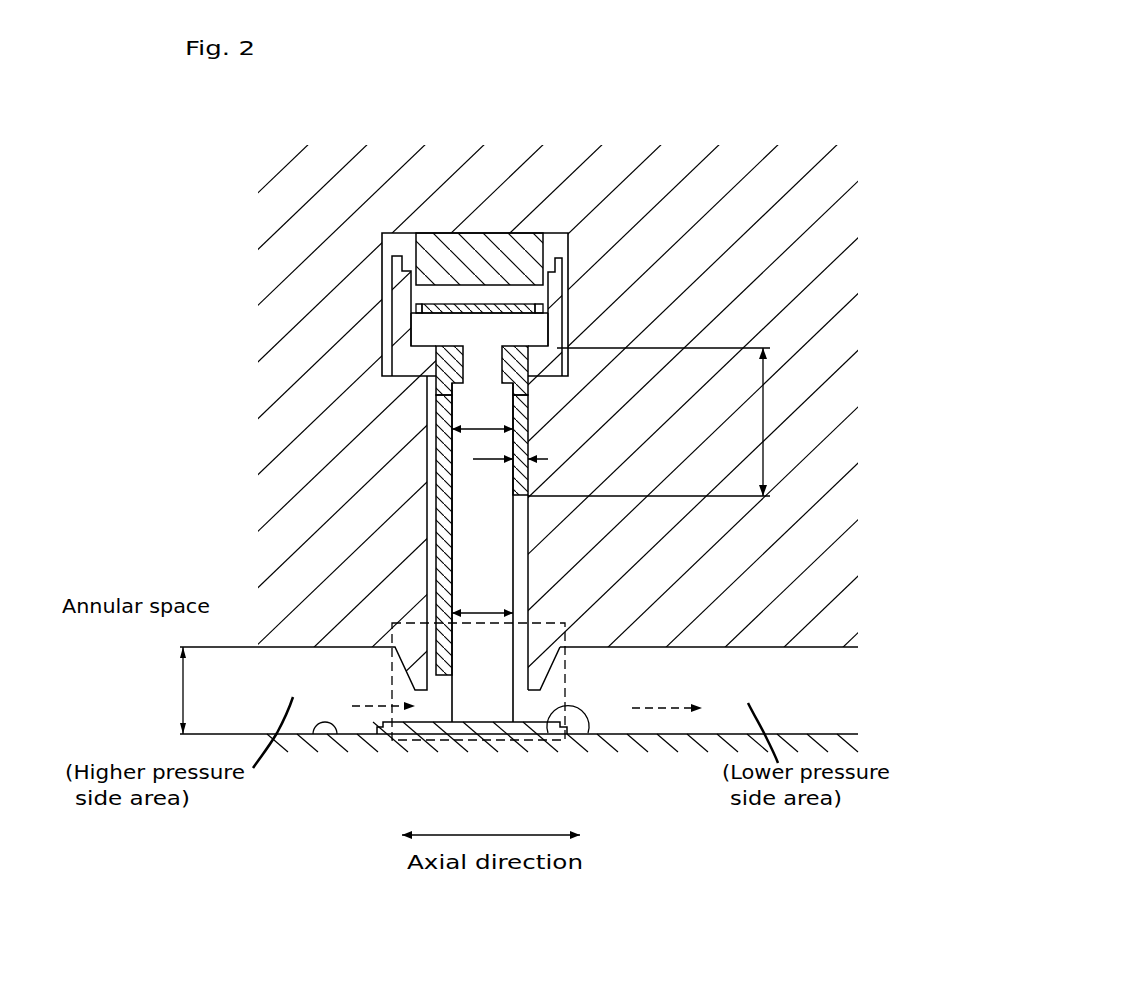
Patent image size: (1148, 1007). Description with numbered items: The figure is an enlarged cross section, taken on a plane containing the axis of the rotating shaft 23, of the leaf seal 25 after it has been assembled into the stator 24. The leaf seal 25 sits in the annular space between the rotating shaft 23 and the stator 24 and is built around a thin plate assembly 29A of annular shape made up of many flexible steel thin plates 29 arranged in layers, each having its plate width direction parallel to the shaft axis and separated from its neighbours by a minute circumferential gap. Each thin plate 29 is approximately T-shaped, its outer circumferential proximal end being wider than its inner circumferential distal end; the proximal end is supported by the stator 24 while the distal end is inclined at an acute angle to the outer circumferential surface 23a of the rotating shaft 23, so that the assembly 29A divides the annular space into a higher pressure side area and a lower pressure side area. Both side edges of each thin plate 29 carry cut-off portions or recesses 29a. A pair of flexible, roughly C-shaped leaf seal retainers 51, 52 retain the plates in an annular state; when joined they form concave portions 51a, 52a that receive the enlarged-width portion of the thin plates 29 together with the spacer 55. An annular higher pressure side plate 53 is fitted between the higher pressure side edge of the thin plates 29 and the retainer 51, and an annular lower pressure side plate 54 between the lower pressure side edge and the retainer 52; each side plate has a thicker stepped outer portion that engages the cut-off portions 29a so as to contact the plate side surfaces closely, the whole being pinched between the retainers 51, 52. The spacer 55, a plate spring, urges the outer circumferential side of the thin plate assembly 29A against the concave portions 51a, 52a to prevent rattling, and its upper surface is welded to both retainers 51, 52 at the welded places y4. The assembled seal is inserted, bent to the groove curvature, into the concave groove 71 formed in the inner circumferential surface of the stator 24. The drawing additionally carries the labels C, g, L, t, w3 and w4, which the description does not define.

The rotating shaft 23 is at (310, 737).
The outer circumferential surface 23a is at (573, 735).
The stator 24 is at (818, 292).
The leaf seal 25 is at (362, 443).
The thin plate 29 is at (472, 765).
The thin plate assembly 29A is at (490, 702).
The cut-off portions 29a is at (420, 372).
The leaf seal retainer 51 is at (400, 294).
The concave portion 51a is at (411, 332).
The leaf seal retainer 52 is at (560, 292).
The concave portion 52a is at (548, 320).
The higher pressure side plate 53 is at (437, 503).
The lower pressure side plate 54 is at (530, 480).
The spacer 55 is at (418, 309).
The concave groove 71 is at (430, 233).
The clearance region C is at (392, 676).
The gap g is at (385, 707).
The length L is at (763, 420).
The thickness t is at (496, 461).
The width w3 is at (480, 427).
The width w4 is at (481, 612).
The welded places y4 is at (494, 296).